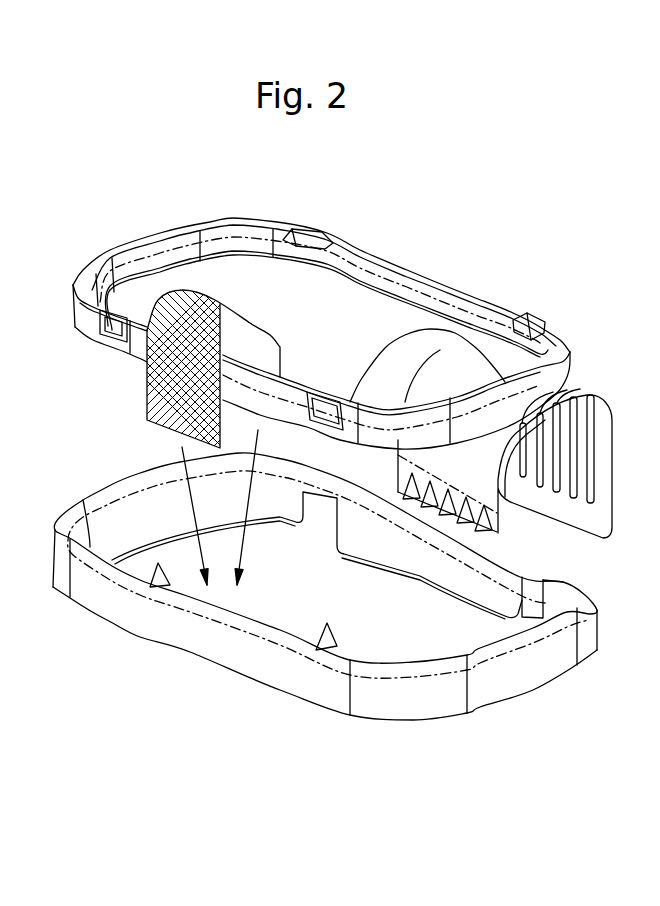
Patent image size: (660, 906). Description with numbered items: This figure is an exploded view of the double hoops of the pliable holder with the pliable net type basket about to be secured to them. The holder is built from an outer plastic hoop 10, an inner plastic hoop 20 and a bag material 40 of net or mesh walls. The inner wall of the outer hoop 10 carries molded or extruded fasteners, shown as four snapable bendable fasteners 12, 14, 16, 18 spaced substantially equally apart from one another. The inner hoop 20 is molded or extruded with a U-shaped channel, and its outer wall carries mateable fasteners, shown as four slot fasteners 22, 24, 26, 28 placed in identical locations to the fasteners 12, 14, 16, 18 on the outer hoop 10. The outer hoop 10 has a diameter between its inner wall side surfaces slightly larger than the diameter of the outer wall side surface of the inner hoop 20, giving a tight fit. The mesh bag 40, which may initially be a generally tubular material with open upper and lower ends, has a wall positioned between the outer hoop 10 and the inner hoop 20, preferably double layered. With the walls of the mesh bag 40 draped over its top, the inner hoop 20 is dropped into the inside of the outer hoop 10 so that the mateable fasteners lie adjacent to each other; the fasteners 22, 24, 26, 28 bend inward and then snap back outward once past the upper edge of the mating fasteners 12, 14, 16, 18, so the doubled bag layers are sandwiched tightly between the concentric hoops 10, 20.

The outer plastic hoop 10 is at (223, 682).
The snapable bendable fastener 12 is at (337, 540).
The snapable bendable fastener 14 is at (543, 607).
The snapable bendable fastener 16 is at (327, 627).
The snapable bendable fastener 18 is at (160, 563).
The inner plastic hoop 20 is at (363, 240).
The slot fastener 22 is at (297, 230).
The slot fastener 24 is at (530, 313).
The slot fastener 26 is at (330, 415).
The slot fastener 28 is at (113, 333).
The bag material 40 is at (143, 407).